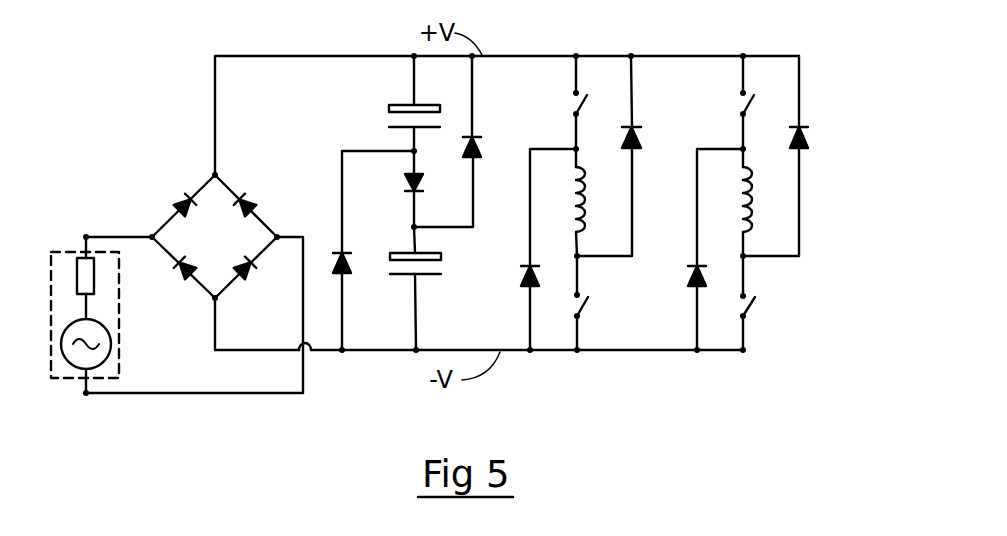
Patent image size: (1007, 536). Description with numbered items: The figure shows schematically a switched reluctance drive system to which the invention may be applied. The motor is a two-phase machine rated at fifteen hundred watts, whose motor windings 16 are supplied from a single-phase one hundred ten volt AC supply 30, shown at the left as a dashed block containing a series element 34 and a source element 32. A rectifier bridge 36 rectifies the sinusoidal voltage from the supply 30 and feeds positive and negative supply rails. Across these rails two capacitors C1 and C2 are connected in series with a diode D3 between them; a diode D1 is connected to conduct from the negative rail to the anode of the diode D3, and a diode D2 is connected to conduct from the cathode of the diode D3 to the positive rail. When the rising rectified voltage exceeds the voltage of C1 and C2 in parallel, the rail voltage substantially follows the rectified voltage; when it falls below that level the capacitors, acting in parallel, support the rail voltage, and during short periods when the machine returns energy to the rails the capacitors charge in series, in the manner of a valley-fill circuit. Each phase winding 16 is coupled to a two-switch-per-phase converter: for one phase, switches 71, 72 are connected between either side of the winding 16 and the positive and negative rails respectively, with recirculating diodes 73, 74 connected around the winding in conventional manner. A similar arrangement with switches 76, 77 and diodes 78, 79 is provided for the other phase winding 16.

The motor windings 16 is at (590, 183).
The single-phase AC supply 30 is at (53, 380).
The AC voltage generator 32 is at (113, 357).
The series resistor 34 is at (73, 278).
The rectifier bridge 36 is at (180, 236).
The switch 71 is at (574, 108).
The switch 72 is at (596, 305).
The recirculating diode 73 is at (638, 120).
The recirculating diode 74 is at (527, 278).
The switch 76 is at (741, 108).
The switch 77 is at (757, 305).
The diode 78 is at (817, 133).
The diode 79 is at (687, 285).
The capacitor C1 is at (394, 103).
The capacitor C2 is at (435, 288).
The diode D1 is at (359, 286).
The diode D2 is at (492, 106).
The diode D3 is at (434, 189).